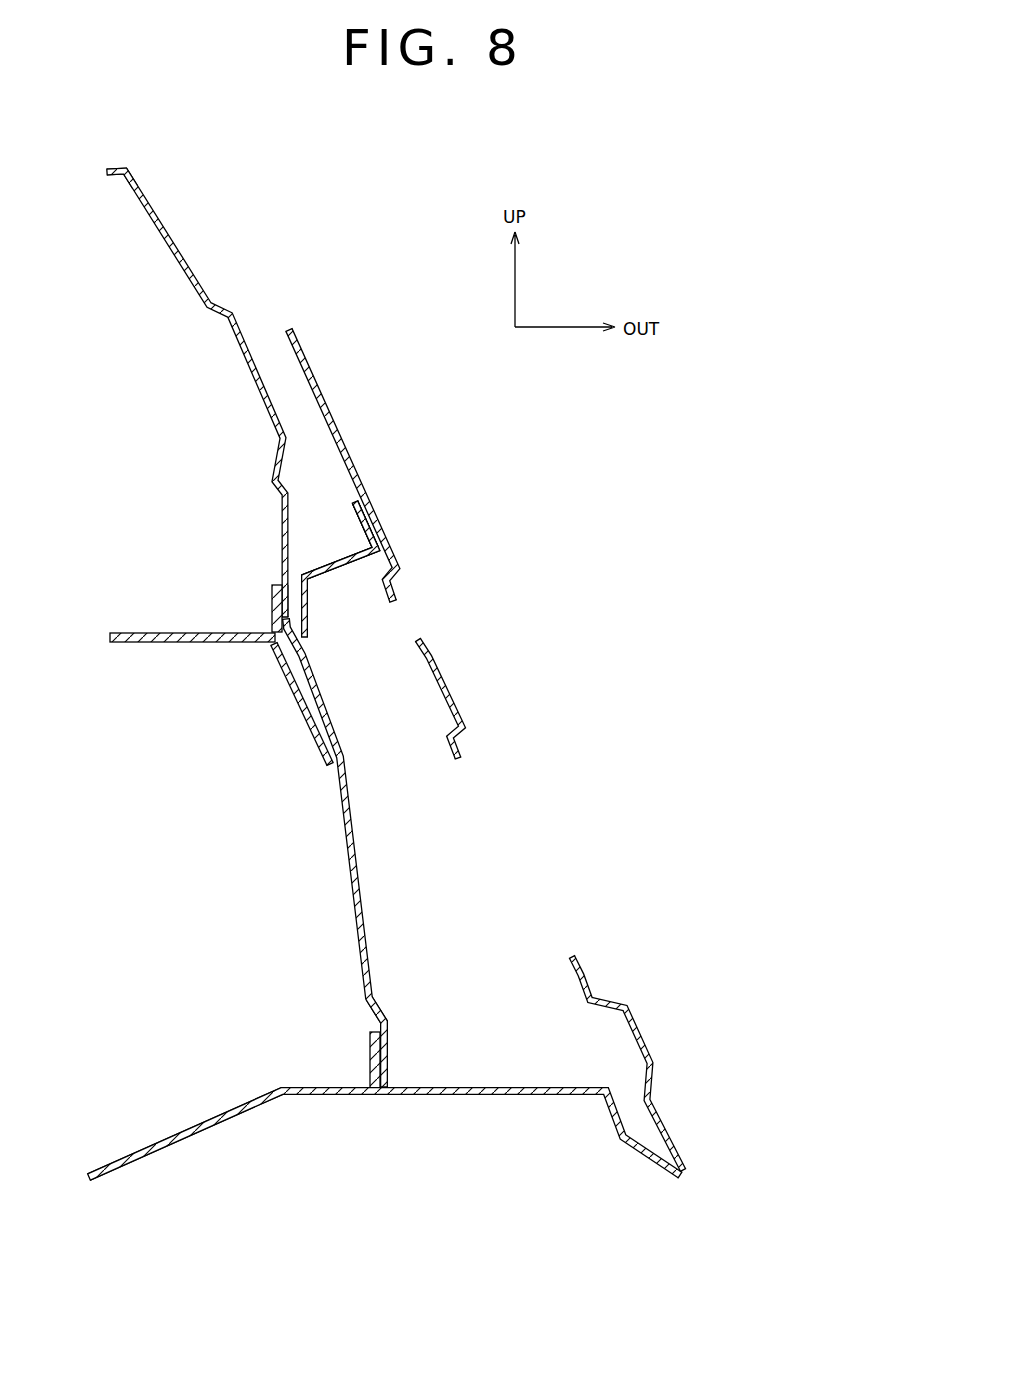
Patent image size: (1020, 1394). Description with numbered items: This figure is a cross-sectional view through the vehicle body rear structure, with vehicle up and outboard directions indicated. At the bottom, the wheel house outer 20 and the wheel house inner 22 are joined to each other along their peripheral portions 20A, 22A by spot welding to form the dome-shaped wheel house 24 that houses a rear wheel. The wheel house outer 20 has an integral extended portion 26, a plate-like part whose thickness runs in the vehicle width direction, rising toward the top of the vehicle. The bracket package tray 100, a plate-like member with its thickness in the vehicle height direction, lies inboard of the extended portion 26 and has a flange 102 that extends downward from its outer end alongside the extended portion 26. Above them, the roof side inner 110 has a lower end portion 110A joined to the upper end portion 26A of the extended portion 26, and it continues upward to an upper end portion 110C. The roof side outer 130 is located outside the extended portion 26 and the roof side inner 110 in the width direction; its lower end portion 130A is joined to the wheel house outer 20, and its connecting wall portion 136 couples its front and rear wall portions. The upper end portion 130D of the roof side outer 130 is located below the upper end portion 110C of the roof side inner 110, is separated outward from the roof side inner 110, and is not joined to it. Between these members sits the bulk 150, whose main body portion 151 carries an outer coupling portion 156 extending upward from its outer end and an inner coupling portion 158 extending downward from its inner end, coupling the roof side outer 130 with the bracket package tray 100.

The wheel house outer 20 is at (384, 1086).
The peripheral portion 20A is at (389, 1032).
The wheel house inner 22 is at (191, 1122).
The peripheral portion 22A is at (369, 1064).
The wheel house 24 is at (458, 1077).
The extended portion 26 is at (362, 853).
The upper end portion 26A is at (272, 594).
The bracket package tray 100 is at (151, 632).
The flange 102 is at (293, 702).
The roof side inner 110 is at (239, 410).
The lower end portion 110A is at (287, 624).
The upper end portion 110C is at (118, 167).
The roof side outer 130 is at (459, 687).
The lower end portion 130A is at (684, 1162).
The upper end portion 130D is at (288, 327).
The connecting wall portion 136 is at (381, 524).
The bulk 150 is at (380, 542).
The main body portion 151 is at (302, 574).
The outer coupling portion 156 is at (351, 502).
The inner coupling portion 158 is at (309, 603).